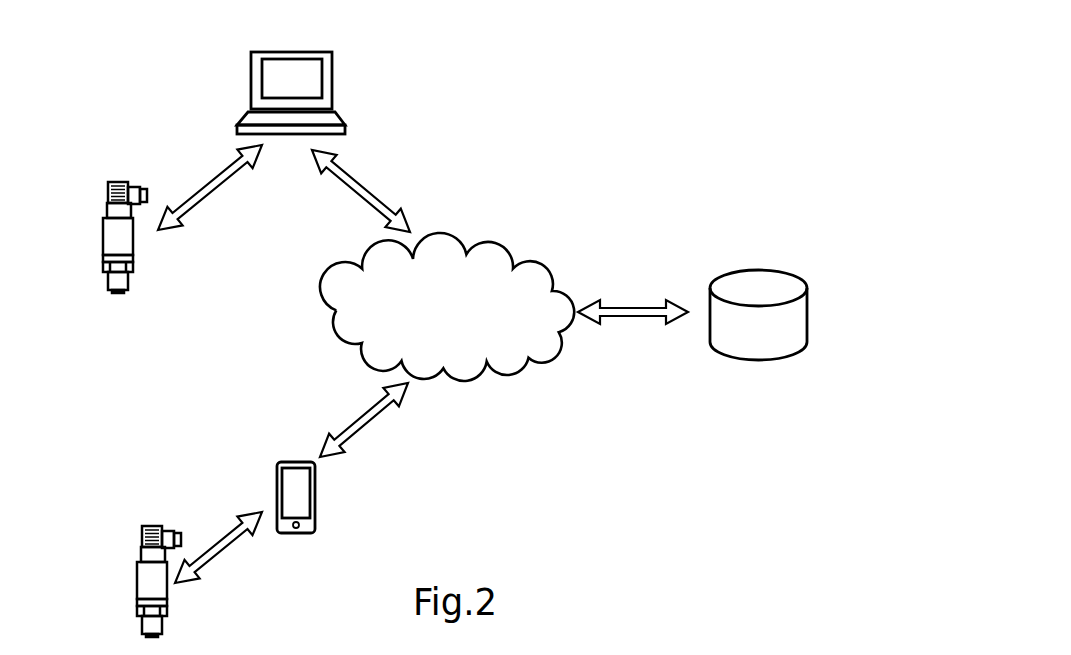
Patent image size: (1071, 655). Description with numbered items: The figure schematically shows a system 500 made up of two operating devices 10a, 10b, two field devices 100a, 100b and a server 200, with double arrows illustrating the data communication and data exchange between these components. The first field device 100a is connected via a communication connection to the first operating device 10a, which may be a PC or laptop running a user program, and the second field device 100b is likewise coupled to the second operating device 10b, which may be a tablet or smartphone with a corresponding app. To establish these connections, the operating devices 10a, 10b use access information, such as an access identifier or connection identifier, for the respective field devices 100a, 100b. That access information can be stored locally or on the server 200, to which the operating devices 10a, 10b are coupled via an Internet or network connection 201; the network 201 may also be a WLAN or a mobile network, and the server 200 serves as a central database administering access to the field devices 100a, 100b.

The system 500 is at (583, 122).
The first field device 100a is at (83, 192).
The second field device 100b is at (121, 530).
The first operating device 10a is at (364, 93).
The second operating device 10b is at (347, 499).
The network connection 201 is at (534, 238).
The server 200 is at (836, 341).